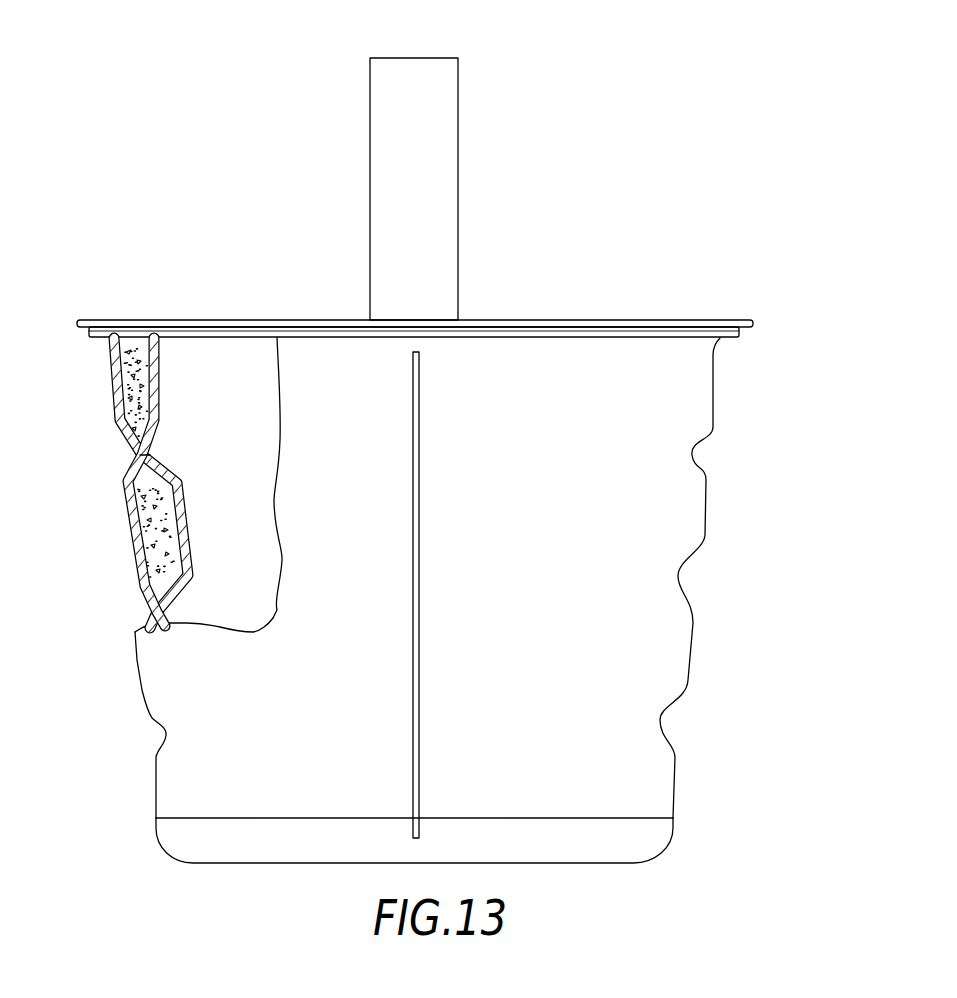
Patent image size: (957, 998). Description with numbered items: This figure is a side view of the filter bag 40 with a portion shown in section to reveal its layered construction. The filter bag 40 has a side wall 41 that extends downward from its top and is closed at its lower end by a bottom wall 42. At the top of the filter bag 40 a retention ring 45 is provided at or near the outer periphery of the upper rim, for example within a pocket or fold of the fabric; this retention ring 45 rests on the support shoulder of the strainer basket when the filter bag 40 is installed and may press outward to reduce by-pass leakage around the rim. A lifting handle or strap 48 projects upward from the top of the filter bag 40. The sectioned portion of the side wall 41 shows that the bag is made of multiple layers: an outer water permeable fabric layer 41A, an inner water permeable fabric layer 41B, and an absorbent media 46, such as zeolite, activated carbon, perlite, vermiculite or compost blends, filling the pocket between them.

The filter bag 40 is at (240, 138).
The side wall 41 is at (667, 642).
The outer water permeable fabric layer 41A is at (113, 412).
The inner water permeable fabric layer 41B is at (160, 405).
The bottom wall 42 is at (590, 863).
The retention ring 45 is at (744, 320).
The absorbent media 46 is at (132, 446).
The lifting handle or strap 48 is at (438, 155).